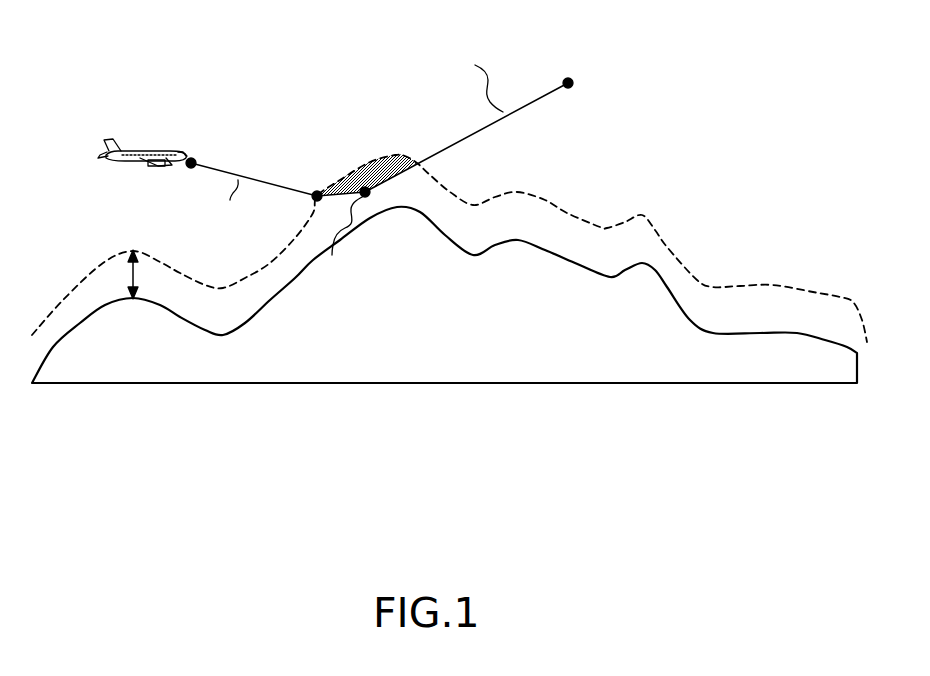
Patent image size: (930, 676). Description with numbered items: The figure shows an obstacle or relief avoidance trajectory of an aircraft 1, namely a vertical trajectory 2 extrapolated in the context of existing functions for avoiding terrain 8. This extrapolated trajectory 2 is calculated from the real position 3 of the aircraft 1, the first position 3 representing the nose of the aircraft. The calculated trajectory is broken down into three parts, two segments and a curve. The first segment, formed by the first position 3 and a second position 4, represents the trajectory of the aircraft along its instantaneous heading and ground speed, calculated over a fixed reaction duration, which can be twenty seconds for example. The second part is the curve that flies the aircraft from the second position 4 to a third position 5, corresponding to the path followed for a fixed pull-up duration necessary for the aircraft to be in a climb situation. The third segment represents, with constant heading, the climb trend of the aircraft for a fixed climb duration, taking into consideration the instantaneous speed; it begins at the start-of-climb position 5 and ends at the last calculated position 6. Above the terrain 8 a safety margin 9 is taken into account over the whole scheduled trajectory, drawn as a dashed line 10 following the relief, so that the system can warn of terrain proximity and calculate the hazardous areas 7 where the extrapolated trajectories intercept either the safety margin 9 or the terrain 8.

The aircraft 1 is at (110, 133).
The extrapolated vertical trajectory 2 is at (395, 75).
The real position of the aircraft 3 is at (194, 152).
The second position 4 is at (310, 190).
The start-of-climb position 5 is at (370, 193).
The last calculated position 6 is at (568, 78).
The hazardous area 7 is at (388, 157).
The terrain 8 is at (513, 367).
The safety margin 9 is at (123, 270).
The safety altitude line 10 is at (655, 212).